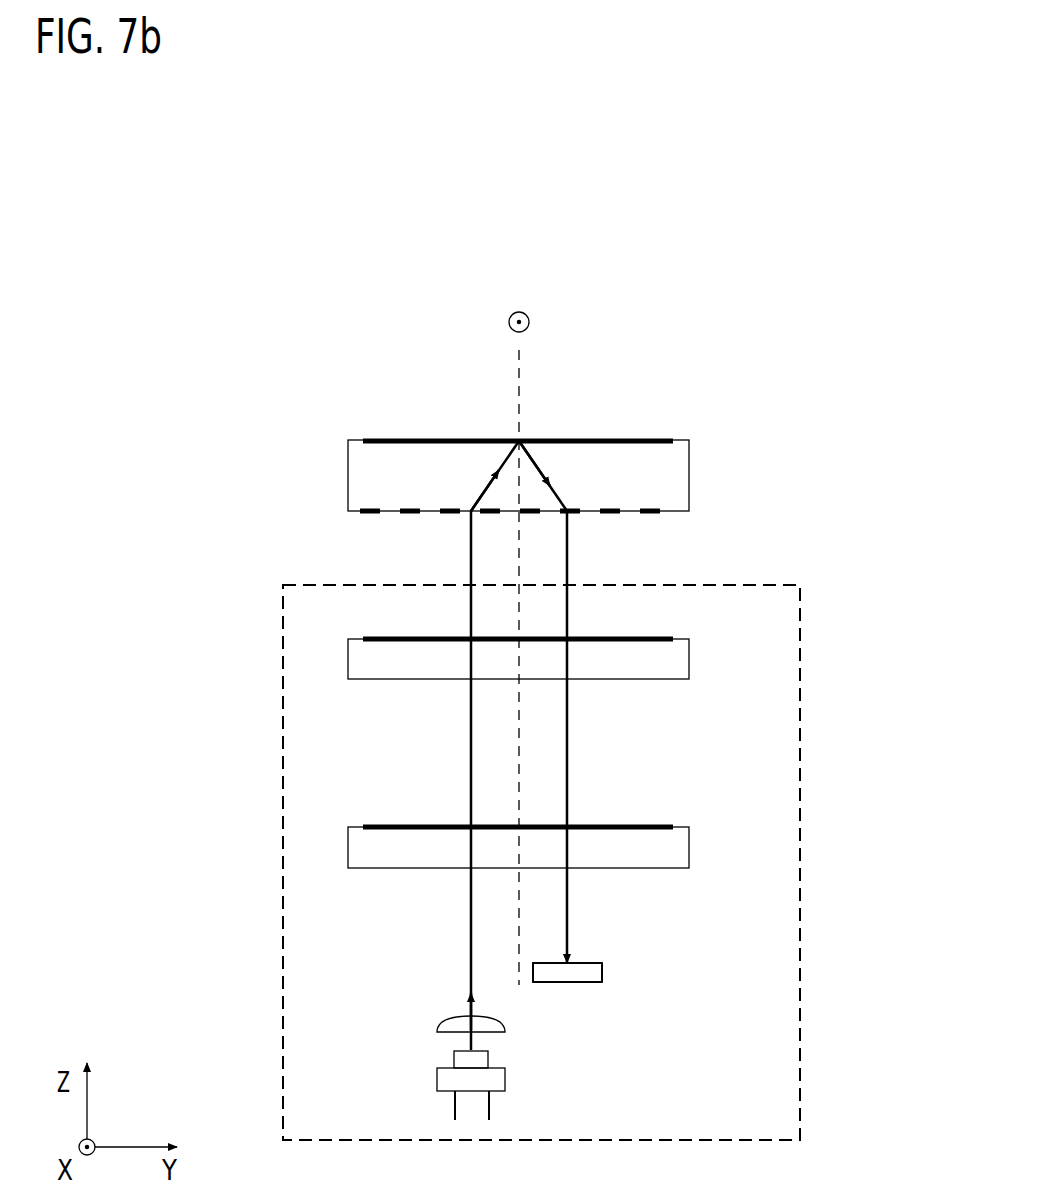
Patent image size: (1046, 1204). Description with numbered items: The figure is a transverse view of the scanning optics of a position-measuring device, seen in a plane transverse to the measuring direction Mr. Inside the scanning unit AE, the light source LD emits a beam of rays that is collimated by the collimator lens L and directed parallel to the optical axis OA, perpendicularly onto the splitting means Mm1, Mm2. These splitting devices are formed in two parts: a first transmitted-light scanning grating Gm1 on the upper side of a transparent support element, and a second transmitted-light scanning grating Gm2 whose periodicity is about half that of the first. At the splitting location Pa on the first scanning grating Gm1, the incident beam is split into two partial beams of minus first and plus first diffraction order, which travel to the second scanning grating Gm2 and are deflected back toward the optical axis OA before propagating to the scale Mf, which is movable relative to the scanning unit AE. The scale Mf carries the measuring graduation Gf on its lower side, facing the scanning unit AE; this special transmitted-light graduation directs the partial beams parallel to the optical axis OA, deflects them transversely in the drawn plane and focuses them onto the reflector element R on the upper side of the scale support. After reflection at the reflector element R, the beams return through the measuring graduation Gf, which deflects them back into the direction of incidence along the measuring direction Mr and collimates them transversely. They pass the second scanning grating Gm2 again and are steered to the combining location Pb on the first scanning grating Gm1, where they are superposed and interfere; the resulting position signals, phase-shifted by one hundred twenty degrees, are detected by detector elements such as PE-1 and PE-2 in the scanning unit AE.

The optical axis OA is at (519, 377).
The measuring direction Mr is at (515, 301).
The measuring graduation Gf is at (368, 510).
The reflector element R is at (658, 438).
The scale Mf is at (680, 494).
The scanning unit AE is at (802, 1045).
The second transmitted-light scanning grating Gm2 is at (643, 643).
The splitting means Mm2 is at (675, 640).
The first transmitted-light scanning grating Gm1 is at (650, 830).
The splitting means Mm1 is at (677, 830).
The splitting location Pa is at (469, 826).
The combining location Pb is at (570, 826).
The photodetector element -2 PE-2 is at (597, 972).
The detector element PE-1 is at (627, 994).
The collimator lens L is at (445, 1030).
The light source LD is at (505, 1084).